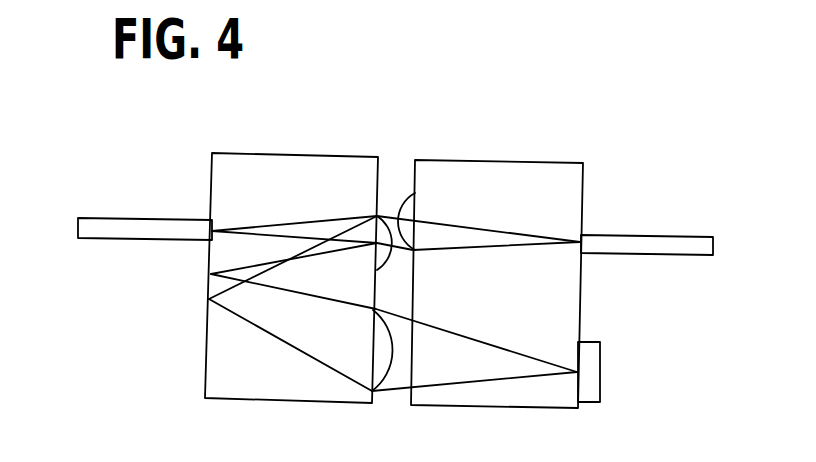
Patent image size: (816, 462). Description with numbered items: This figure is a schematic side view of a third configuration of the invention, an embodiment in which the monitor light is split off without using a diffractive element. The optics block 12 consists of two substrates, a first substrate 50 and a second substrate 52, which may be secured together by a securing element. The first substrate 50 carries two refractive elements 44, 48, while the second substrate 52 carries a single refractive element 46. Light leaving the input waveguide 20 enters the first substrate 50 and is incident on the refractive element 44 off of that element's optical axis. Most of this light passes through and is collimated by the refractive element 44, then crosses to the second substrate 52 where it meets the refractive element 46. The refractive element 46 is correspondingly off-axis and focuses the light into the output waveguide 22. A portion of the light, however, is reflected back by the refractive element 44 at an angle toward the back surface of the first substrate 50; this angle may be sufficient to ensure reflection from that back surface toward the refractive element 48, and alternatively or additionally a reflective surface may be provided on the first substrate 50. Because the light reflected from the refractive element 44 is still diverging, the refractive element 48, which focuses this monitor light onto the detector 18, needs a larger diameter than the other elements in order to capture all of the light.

The optics block 12 is at (394, 247).
The detector 18 is at (600, 350).
The input waveguide 20 is at (95, 218).
The output waveguide 22 is at (659, 235).
The refractive element 44 is at (383, 215).
The refractive element 46 is at (404, 222).
The refractive element 48 is at (391, 376).
The first substrate 50 is at (310, 153).
The second substrate 52 is at (522, 160).